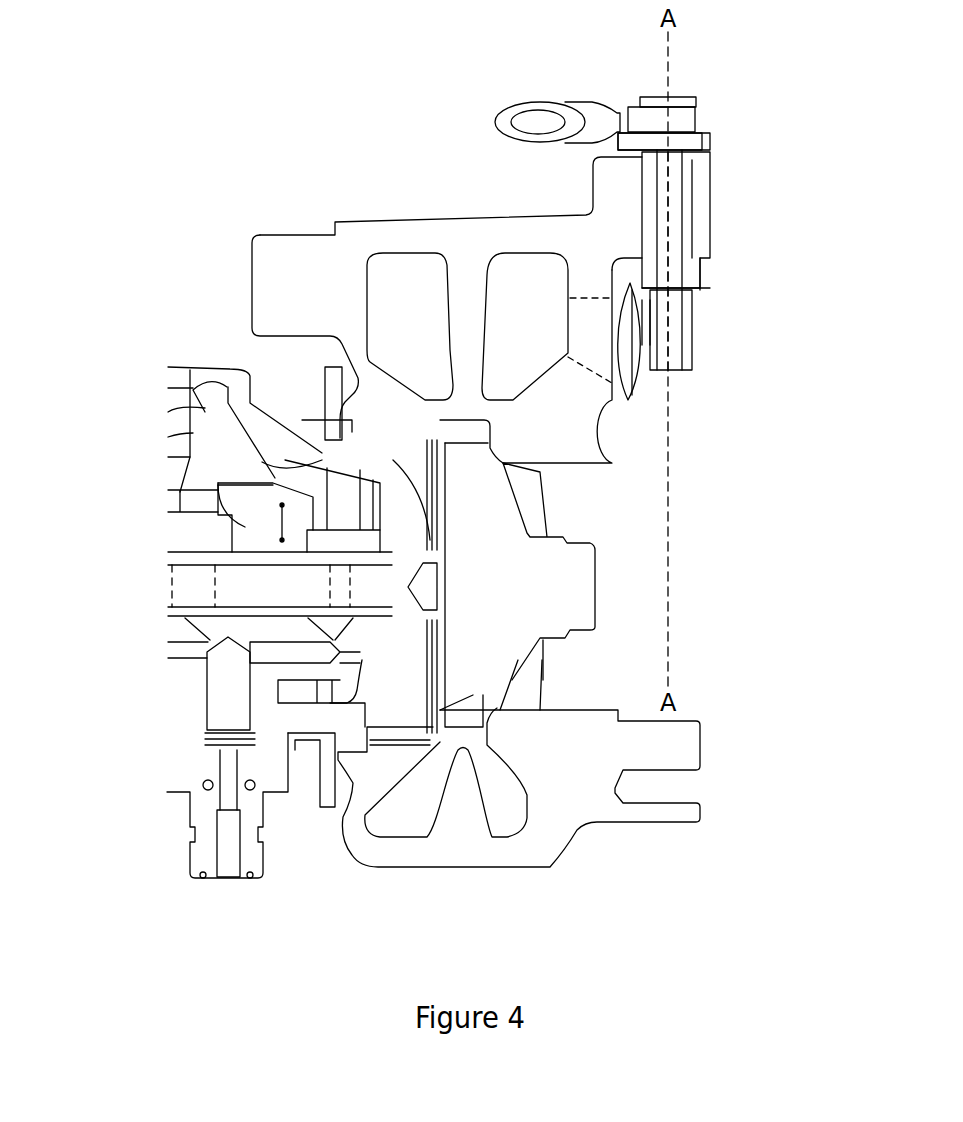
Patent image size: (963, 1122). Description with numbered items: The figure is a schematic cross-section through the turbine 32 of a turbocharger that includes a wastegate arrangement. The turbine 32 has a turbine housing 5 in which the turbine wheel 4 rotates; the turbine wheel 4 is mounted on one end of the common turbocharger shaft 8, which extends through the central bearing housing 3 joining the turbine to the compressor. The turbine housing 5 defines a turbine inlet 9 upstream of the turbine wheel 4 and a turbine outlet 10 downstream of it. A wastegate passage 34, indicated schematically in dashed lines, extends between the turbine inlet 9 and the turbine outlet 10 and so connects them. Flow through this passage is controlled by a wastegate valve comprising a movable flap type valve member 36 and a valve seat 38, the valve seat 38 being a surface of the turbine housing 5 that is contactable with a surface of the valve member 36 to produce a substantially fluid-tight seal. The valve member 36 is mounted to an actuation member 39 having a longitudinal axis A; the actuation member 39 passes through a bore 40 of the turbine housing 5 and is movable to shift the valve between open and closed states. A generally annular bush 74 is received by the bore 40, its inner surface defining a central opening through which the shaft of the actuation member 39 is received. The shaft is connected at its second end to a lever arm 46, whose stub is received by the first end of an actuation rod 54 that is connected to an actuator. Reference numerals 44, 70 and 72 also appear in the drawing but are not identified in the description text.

The central bearing housing 3 is at (243, 393).
The turbine wheel 4 is at (476, 694).
The turbine housing 5 is at (340, 260).
The turbocharger shaft 8 is at (267, 580).
The turbine inlet 9 is at (408, 327).
The turbine outlet 10 is at (620, 530).
The turbine 32 is at (372, 897).
The wastegate passage 34 is at (587, 313).
The valve member 36 is at (640, 335).
The valve seat 38 is at (370, 478).
The actuation member 39 is at (672, 261).
The bore 40 is at (695, 232).
The shaft 44 is at (692, 292).
The lever arm 46 is at (645, 145).
The actuation rod 54 is at (603, 125).
The actuator linkage 70 is at (702, 338).
The linkage assembly 72 is at (718, 127).
The bush 74 is at (692, 258).